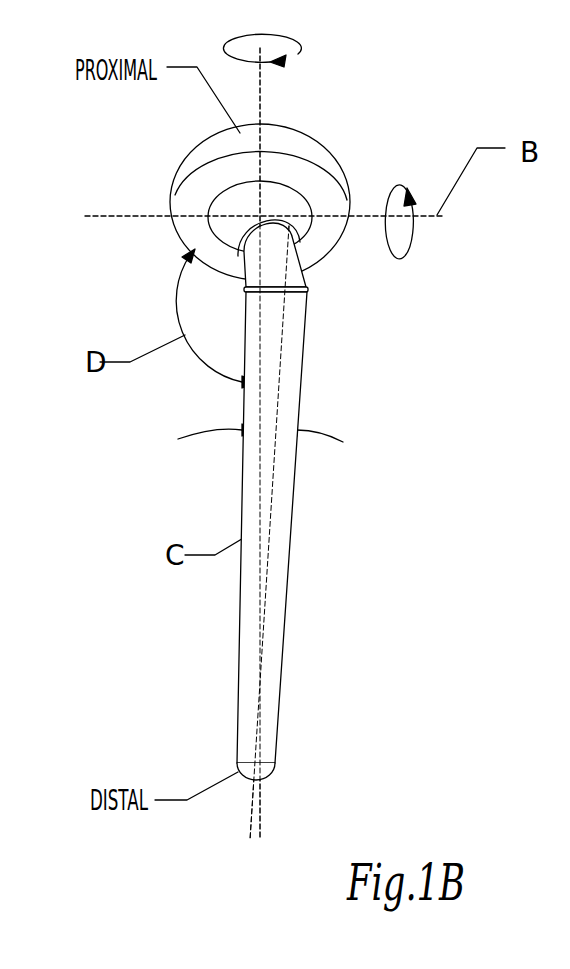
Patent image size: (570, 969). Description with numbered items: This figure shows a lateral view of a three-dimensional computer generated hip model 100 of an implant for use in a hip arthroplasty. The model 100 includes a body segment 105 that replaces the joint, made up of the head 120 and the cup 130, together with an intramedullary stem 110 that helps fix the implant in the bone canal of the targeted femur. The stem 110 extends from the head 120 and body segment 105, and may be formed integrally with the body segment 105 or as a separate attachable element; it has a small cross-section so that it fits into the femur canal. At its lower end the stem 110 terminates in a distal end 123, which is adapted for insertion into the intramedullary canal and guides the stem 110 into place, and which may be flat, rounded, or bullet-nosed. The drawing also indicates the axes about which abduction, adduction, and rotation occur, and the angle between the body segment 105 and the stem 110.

The hip model 100 is at (472, 92).
The body segment 105 is at (295, 138).
The stem 110 is at (284, 527).
The head 120 is at (188, 233).
The distal end 123 is at (317, 750).
The cup 130 is at (212, 137).